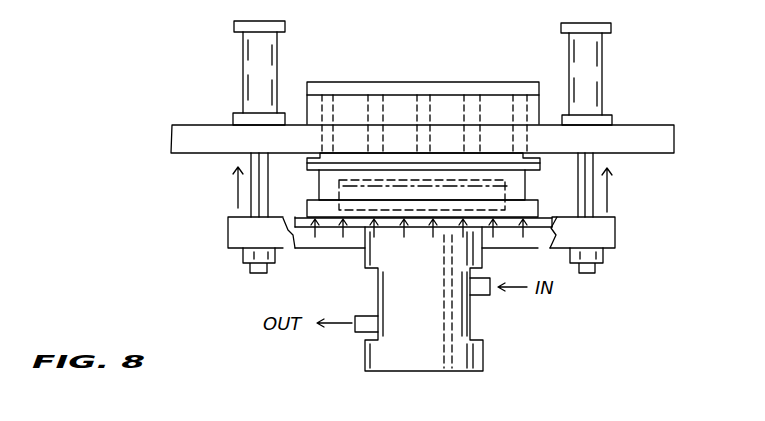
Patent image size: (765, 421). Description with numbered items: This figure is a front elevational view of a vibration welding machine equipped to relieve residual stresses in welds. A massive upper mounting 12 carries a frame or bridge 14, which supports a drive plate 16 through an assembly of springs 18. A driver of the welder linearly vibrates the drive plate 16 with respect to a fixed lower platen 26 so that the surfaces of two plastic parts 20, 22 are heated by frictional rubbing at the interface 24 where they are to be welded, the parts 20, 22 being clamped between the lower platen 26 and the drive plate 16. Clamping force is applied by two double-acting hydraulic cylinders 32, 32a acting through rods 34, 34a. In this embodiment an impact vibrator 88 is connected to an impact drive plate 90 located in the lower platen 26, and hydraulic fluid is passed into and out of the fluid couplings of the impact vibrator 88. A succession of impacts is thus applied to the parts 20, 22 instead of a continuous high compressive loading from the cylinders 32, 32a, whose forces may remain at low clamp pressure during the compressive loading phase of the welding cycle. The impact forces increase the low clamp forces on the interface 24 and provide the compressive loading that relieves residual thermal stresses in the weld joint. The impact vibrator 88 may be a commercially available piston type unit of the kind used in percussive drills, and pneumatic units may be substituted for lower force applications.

The upper mounting 12 is at (676, 140).
The frame or bridge 14 is at (455, 80).
The drive plate 16 is at (540, 152).
The springs 18 is at (333, 97).
The plastic part 20 is at (515, 183).
The plastic part 22 is at (320, 188).
The interface 24 is at (508, 189).
The lower platen 26 is at (561, 249).
The hydraulic cylinder 32 is at (602, 50).
The hydraulic cylinder 32a is at (243, 55).
The rod 34 is at (596, 164).
The rod 34a is at (248, 162).
The impact vibrator 88 is at (378, 283).
The impact drive plate 90 is at (548, 216).